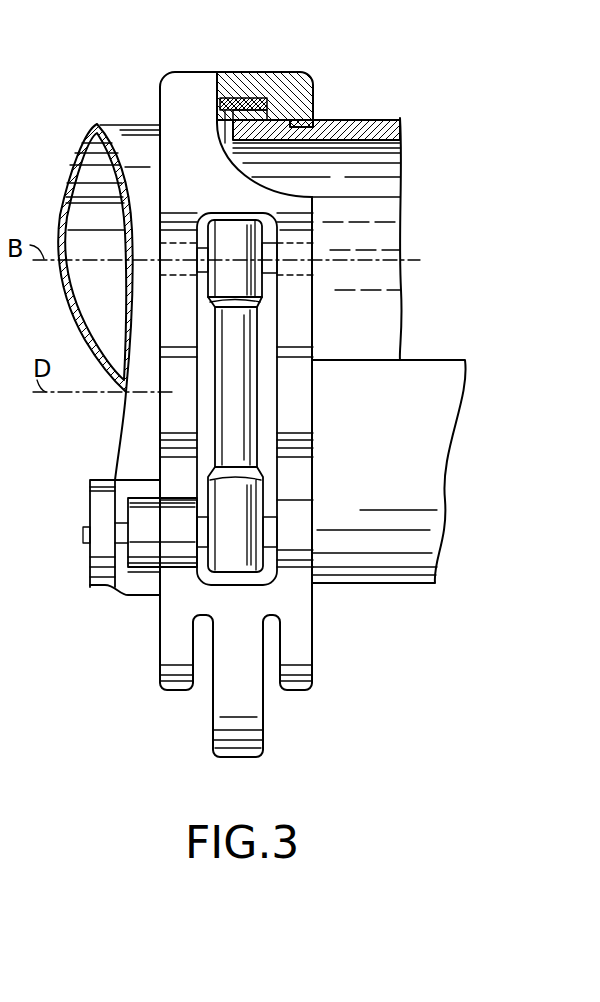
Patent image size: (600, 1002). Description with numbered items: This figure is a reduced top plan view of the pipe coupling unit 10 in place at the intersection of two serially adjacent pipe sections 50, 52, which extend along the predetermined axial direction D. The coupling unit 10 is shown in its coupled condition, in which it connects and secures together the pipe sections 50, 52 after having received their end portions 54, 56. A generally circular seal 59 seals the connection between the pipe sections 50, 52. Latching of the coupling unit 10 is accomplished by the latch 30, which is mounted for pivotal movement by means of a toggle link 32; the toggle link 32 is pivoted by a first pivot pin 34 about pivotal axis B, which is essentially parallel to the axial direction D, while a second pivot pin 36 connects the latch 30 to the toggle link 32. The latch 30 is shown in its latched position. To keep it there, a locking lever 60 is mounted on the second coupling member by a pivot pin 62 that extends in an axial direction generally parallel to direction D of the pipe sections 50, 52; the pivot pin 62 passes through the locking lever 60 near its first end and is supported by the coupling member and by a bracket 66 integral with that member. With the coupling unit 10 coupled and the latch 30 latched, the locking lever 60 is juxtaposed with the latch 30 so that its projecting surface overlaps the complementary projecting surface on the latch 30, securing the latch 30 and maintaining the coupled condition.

The pipe coupling unit 10 is at (160, 80).
The latch 30 is at (216, 719).
The toggle link 32 is at (250, 340).
The first pivot pin 34 is at (272, 273).
The second pivot pin 36 is at (272, 520).
The pipe section 50 is at (97, 124).
The pipe section 52 is at (357, 118).
The end portion 54 is at (237, 98).
The end portion 56 is at (250, 110).
The seal 59 is at (293, 74).
The locking lever 60 is at (148, 570).
The pivot pin 62 is at (85, 543).
The bracket 66 is at (90, 578).